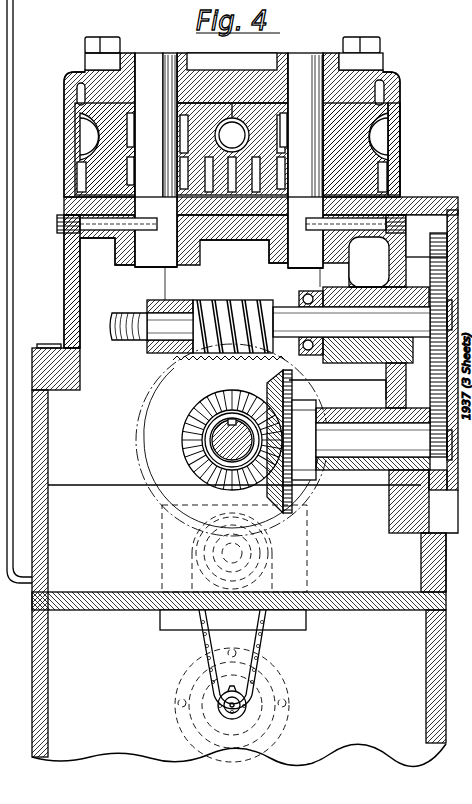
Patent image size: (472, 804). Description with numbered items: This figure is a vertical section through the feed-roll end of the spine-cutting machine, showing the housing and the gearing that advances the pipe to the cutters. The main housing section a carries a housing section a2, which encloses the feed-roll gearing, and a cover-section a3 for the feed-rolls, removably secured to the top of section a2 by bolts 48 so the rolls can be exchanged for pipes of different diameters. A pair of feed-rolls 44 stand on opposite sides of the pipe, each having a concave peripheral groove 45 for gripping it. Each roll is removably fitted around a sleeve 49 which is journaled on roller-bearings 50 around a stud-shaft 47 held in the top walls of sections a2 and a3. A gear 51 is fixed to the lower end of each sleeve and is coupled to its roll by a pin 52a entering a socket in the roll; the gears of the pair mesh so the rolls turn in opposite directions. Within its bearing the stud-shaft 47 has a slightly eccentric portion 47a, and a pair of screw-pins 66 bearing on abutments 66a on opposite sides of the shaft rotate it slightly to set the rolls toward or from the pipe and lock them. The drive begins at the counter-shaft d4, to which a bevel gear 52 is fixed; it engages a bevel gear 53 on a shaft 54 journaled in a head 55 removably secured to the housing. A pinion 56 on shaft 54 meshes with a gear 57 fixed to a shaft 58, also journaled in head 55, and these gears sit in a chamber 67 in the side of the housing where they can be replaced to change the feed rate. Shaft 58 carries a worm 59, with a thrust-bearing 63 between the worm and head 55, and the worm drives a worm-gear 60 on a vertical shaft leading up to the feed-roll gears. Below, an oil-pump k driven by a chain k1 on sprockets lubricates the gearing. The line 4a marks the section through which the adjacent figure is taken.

The main housing section a is at (78, 84).
The housing section a2 is at (64, 272).
The cover-section a3 is at (74, 72).
The bolts 48 is at (368, 42).
The stud-shaft 47 is at (77, 100).
The eccentric portion 47a is at (340, 128).
The sleeve 49 is at (90, 128).
The concave peripheral groove 45 is at (100, 140).
The feed-rolls 44 is at (392, 147).
The roller-bearings 50 is at (78, 165).
The gear 51 is at (78, 183).
The section line 4a is at (49, 213).
The screw-pins 66 is at (100, 238).
The abutments 66a is at (142, 263).
The pin 52a is at (264, 242).
The gear 57 is at (440, 238).
The thrust-bearing 63 is at (340, 290).
The shaft 58 is at (351, 322).
The worm 59 is at (252, 297).
The worm-gear 60 is at (135, 340).
The bevel gear 52 is at (182, 440).
The counter-shaft d4 is at (215, 455).
The bevel gear 53 is at (292, 505).
The shaft 54 is at (359, 416).
The head 55 is at (410, 533).
The pinion 56 is at (436, 470).
The chamber 67 is at (440, 525).
The chain k1 is at (266, 650).
The oil-pump k is at (258, 718).